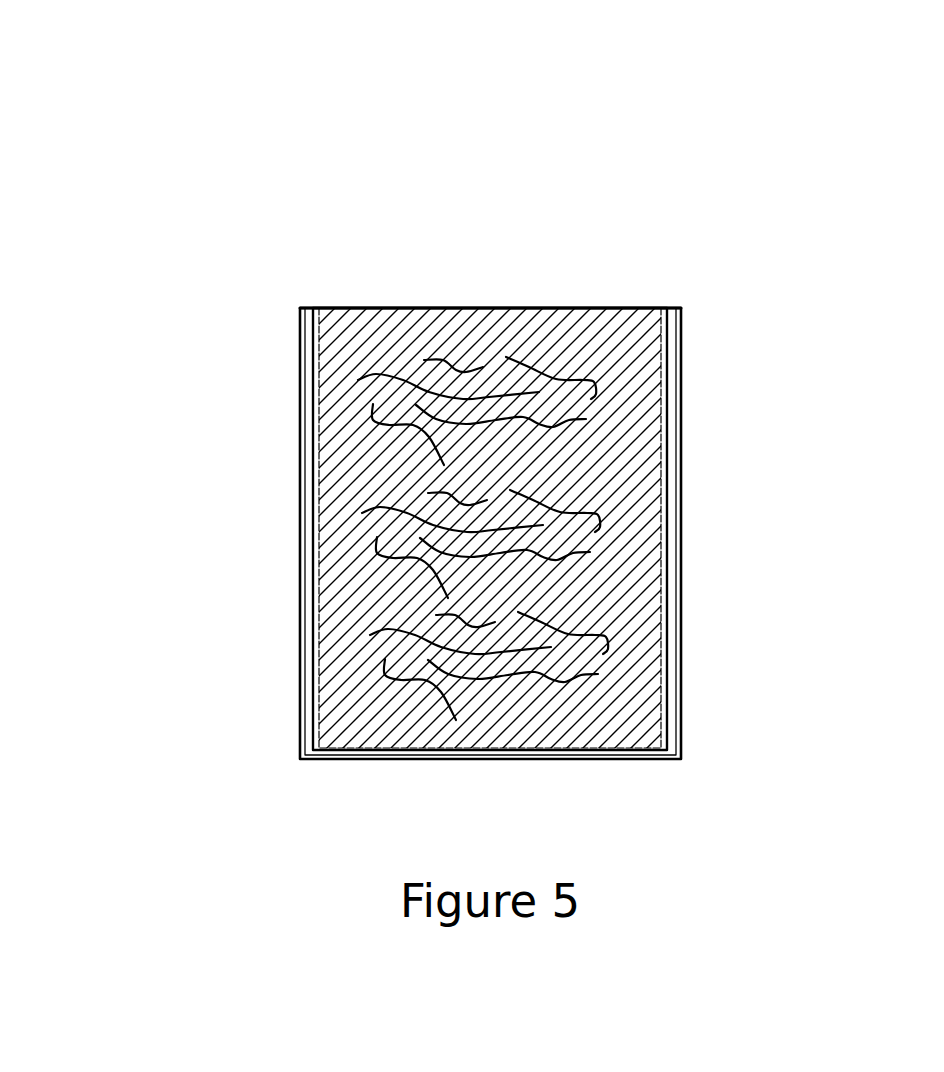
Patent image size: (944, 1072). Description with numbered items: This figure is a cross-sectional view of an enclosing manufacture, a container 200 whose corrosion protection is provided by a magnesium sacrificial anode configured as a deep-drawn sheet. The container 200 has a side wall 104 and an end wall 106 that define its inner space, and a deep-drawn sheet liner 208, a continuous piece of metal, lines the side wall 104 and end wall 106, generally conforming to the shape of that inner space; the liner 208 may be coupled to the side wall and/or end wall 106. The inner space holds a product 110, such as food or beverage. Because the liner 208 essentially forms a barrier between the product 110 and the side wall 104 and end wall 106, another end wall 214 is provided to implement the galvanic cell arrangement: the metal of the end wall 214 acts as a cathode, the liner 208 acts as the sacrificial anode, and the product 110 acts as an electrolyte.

The container 200 is at (175, 112).
The side wall 104 is at (299, 347).
The end wall 214 is at (625, 307).
The end wall 106 is at (615, 760).
The deep-drawn sheet liner 208 is at (485, 330).
The product 110 is at (526, 362).